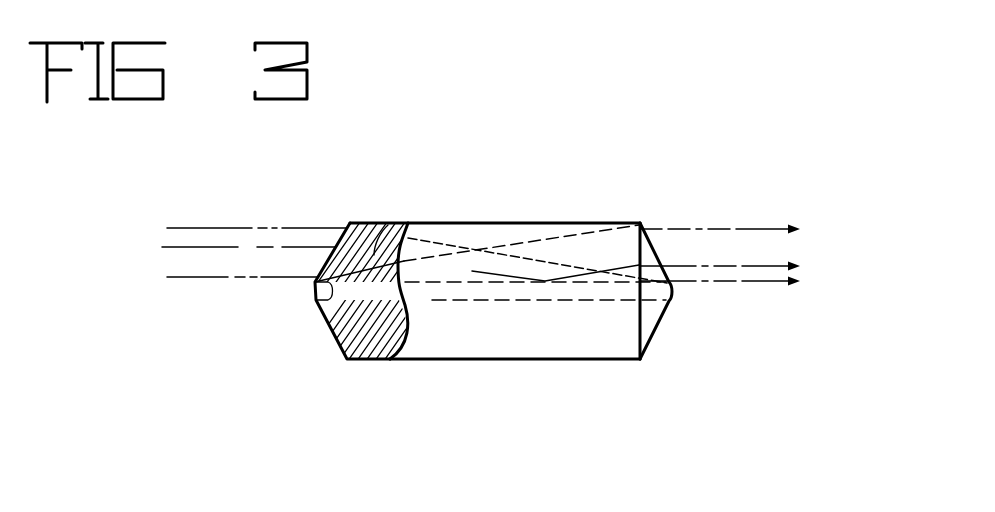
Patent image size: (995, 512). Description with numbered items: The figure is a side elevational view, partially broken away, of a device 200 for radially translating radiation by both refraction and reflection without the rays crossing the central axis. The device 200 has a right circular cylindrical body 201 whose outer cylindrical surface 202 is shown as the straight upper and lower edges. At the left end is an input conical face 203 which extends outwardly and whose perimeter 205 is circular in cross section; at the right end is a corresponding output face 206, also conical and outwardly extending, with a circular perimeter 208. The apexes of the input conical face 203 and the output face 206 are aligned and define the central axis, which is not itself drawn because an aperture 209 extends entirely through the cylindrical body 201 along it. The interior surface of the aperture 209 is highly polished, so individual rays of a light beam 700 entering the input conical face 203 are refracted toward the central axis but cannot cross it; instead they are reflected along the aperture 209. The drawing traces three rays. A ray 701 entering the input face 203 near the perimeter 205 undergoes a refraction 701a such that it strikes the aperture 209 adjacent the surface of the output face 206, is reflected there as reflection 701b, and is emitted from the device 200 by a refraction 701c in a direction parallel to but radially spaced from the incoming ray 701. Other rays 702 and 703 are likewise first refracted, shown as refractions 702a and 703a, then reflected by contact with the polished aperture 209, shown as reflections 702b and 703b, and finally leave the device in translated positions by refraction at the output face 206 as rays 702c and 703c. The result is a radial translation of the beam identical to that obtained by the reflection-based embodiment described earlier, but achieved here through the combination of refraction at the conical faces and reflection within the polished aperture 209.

The device 200 is at (476, 326).
The right circular cylindrical body 201 is at (500, 364).
The outer cylindrical surface 202 is at (383, 362).
The input conical face 203 is at (318, 329).
The perimeter 205 is at (347, 362).
The output face 206 is at (660, 333).
The perimeter 208 is at (642, 362).
The aperture 209 is at (430, 300).
The light beam 700 is at (216, 223).
The ray 701 is at (170, 226).
The ray 702 is at (170, 248).
The ray 703 is at (190, 279).
The refraction of ray 701 701a is at (440, 241).
The refraction of ray 702 702a is at (393, 203).
The refraction of ray 703 703a is at (323, 261).
The reflection of ray 701 701b is at (673, 296).
The reflection of ray 702 702b is at (590, 275).
The reflection of ray 703 703b is at (602, 229).
The refraction of ray 701 at output 701c is at (768, 283).
The ray 702 at output 702c is at (768, 266).
The ray 703 at output 703c is at (742, 228).